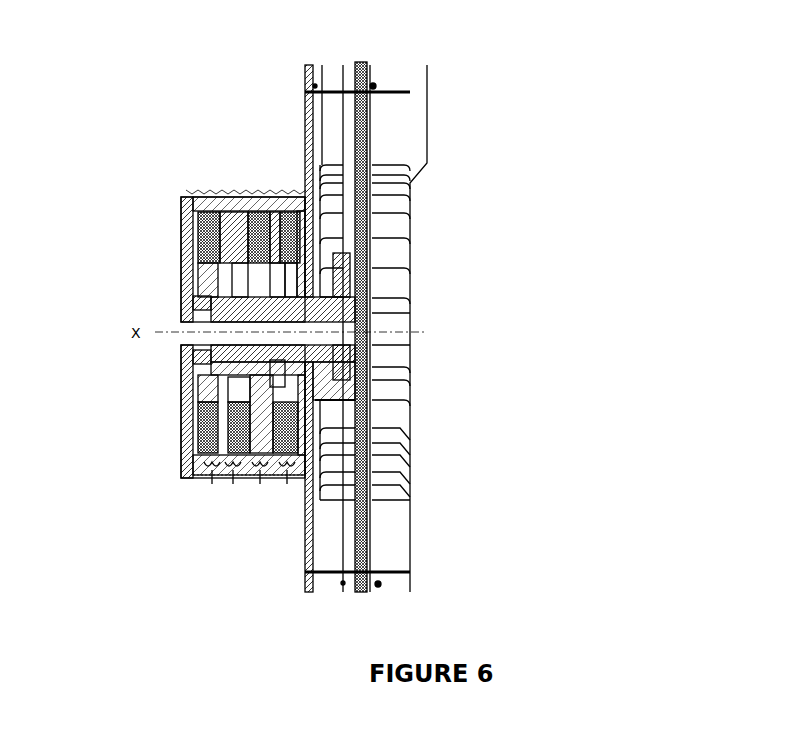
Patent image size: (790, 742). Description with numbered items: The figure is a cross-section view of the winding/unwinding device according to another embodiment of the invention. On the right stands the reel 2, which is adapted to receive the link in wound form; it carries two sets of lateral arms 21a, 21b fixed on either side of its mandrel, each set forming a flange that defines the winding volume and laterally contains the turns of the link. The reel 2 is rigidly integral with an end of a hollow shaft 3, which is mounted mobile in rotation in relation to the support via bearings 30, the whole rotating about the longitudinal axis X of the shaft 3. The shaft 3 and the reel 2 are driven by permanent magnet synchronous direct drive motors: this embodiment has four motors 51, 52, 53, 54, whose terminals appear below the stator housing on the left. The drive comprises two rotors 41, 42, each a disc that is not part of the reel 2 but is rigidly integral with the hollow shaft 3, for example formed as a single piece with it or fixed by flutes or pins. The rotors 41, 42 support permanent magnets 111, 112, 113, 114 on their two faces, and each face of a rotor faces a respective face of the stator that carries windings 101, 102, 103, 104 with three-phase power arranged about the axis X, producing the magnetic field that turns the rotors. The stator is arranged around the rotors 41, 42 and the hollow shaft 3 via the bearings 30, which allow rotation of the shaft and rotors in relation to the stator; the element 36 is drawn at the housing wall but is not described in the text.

The reel 2 is at (584, 63).
The lateral arms 21a is at (305, 125).
The lateral arms 21b is at (428, 113).
The shaft 3 is at (240, 308).
The bearings 30 is at (305, 306).
The bearing support 36 is at (187, 313).
The rotor 41 is at (265, 243).
The rotor 42 is at (232, 300).
The winding 101 is at (286, 245).
The winding 102 is at (268, 243).
The winding 103 is at (222, 438).
The winding 104 is at (225, 258).
The permanent magnets 111 is at (276, 245).
The permanent magnets 112 is at (270, 242).
The permanent magnets 113 is at (215, 400).
The permanent magnets 114 is at (242, 270).
The motor 51 is at (286, 481).
The motor 52 is at (262, 484).
The motor 53 is at (232, 482).
The motor 54 is at (211, 484).